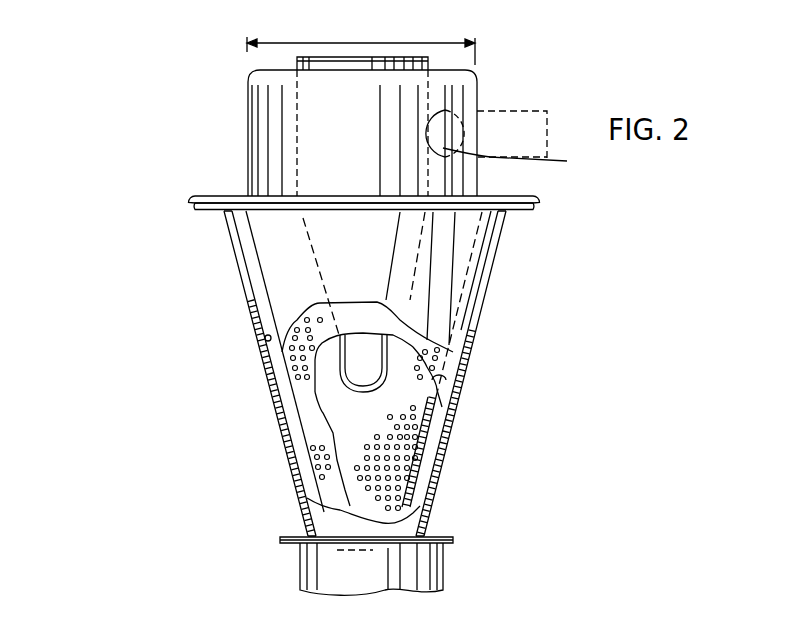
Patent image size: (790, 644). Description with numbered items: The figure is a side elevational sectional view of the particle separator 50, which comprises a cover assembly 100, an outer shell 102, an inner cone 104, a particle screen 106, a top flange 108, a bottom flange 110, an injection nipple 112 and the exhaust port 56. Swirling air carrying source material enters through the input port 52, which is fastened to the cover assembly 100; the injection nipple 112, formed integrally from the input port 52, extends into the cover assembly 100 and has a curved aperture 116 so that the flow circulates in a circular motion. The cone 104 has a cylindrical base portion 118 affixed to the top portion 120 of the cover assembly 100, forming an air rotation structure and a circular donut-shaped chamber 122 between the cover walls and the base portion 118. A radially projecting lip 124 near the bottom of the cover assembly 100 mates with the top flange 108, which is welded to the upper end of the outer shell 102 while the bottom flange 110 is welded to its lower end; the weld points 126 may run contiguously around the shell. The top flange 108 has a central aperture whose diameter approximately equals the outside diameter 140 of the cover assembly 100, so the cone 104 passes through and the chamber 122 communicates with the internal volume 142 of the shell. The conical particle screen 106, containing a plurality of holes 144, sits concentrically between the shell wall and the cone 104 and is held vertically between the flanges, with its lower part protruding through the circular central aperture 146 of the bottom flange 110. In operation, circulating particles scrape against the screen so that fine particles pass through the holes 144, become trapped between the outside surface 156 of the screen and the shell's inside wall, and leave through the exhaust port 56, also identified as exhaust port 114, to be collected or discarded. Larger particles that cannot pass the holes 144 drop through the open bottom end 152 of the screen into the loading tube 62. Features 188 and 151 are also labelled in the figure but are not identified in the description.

The cover assembly 100 is at (174, 102).
The top portion 120 is at (263, 71).
The cylindrical base portion 118 is at (293, 100).
The circular donut-shaped chamber 122 is at (260, 123).
The outside diameter 140 is at (425, 37).
The injection nipple 112 is at (477, 104).
The input port 52 is at (448, 145).
The curved aperture 116 is at (487, 167).
The radially projecting lip 124 is at (195, 196).
The top flange 108 is at (195, 209).
The weld points 126 is at (222, 212).
The outer shell 102 is at (232, 255).
The particle screen 106 is at (243, 307).
The wall opening 188 is at (265, 336).
The internal volume 142 is at (312, 398).
The inner cone 104 is at (418, 285).
The plurality of holes 144 is at (440, 352).
The tube outlet 151 is at (440, 376).
The outside surface 156 is at (453, 417).
The exhaust port 56 is at (443, 449).
The exhaust port 114 is at (437, 463).
The bottom flange 110 is at (280, 541).
The circular central aperture 146 is at (345, 554).
The open bottom end 152 is at (387, 548).
The loading tube 62 is at (433, 593).
The particle separator 50 is at (139, 334).